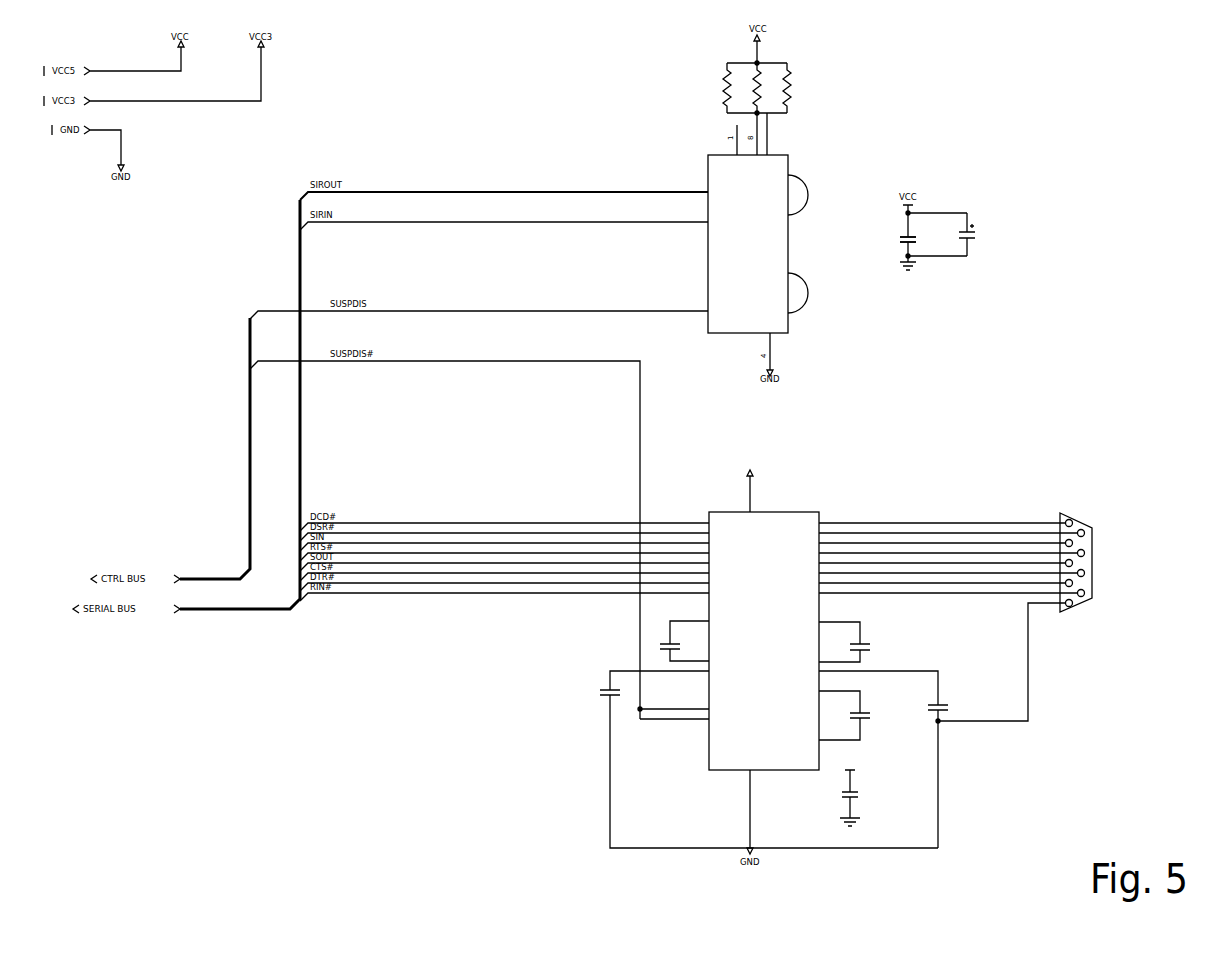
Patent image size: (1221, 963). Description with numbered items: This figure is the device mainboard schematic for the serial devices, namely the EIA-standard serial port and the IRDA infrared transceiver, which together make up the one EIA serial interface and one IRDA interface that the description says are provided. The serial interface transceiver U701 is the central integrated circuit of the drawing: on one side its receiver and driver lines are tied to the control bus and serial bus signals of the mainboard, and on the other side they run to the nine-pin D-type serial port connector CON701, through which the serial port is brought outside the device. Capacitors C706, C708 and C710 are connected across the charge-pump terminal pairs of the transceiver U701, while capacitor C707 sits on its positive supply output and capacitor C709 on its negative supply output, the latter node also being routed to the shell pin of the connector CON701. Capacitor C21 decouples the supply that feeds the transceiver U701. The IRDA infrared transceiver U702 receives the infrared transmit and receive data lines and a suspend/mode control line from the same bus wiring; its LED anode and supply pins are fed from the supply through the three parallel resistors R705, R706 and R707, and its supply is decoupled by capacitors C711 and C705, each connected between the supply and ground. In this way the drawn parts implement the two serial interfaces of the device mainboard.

The LTC1348 RS232 transceiver U701 is at (767, 603).
The TEMIC TFDS6500E infrared transceiver U702 is at (753, 242).
The resistor 47.5 ohm R705 is at (797, 88).
The resistor 10 ohm R706 is at (767, 88).
The resistor 10 ohm R707 is at (738, 88).
The capacitor 4.7uF C705 is at (985, 234).
The capacitor 0.1uF C711 is at (921, 242).
The capacitor 1uF C706 is at (667, 644).
The capacitor 1uF C707 is at (621, 696).
The capacitor 1uF C708 is at (871, 650).
The capacitor 1uF C709 is at (950, 710).
The capacitor 1uF C710 is at (871, 719).
The capacitor 0.1uF C21 is at (862, 792).
The DB9 connector CON701 is at (956, 562).